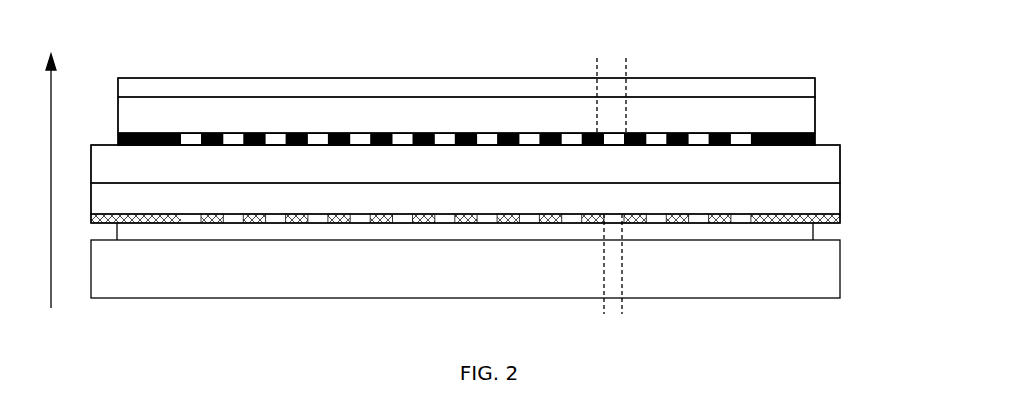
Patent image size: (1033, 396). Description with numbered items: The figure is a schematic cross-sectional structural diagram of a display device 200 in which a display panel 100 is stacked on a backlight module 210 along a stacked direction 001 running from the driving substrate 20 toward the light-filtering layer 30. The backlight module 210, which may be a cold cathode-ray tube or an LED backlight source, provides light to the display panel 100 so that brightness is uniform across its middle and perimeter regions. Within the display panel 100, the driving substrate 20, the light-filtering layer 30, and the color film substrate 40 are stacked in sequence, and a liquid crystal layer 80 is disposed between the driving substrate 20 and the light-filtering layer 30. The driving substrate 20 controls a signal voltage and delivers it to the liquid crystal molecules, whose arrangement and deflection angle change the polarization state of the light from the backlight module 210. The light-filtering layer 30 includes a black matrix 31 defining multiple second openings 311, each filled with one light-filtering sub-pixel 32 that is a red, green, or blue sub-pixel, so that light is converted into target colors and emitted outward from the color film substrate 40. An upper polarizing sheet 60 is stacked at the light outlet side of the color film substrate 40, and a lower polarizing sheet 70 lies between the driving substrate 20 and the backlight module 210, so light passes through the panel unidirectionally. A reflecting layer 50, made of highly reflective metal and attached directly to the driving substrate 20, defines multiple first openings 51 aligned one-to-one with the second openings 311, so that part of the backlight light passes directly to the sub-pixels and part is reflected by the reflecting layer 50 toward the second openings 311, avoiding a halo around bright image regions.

The stacked direction 001 is at (54, 169).
The display device 200 is at (121, 53).
The light-filtering layer 30 is at (755, 39).
The black matrix 31 is at (798, 133).
The light-filtering sub-pixel 32 is at (747, 140).
The second opening 311 is at (597, 58).
The upper polarizing sheet 60 is at (803, 90).
The color film substrate 40 is at (803, 115).
The liquid crystal layer 80 is at (812, 162).
The driving substrate 20 is at (825, 192).
The reflecting layer 50 is at (832, 218).
The first opening 51 is at (604, 314).
The lower polarizing sheet 70 is at (803, 230).
The backlight module 210 is at (828, 274).
The display panel 100 is at (898, 93).